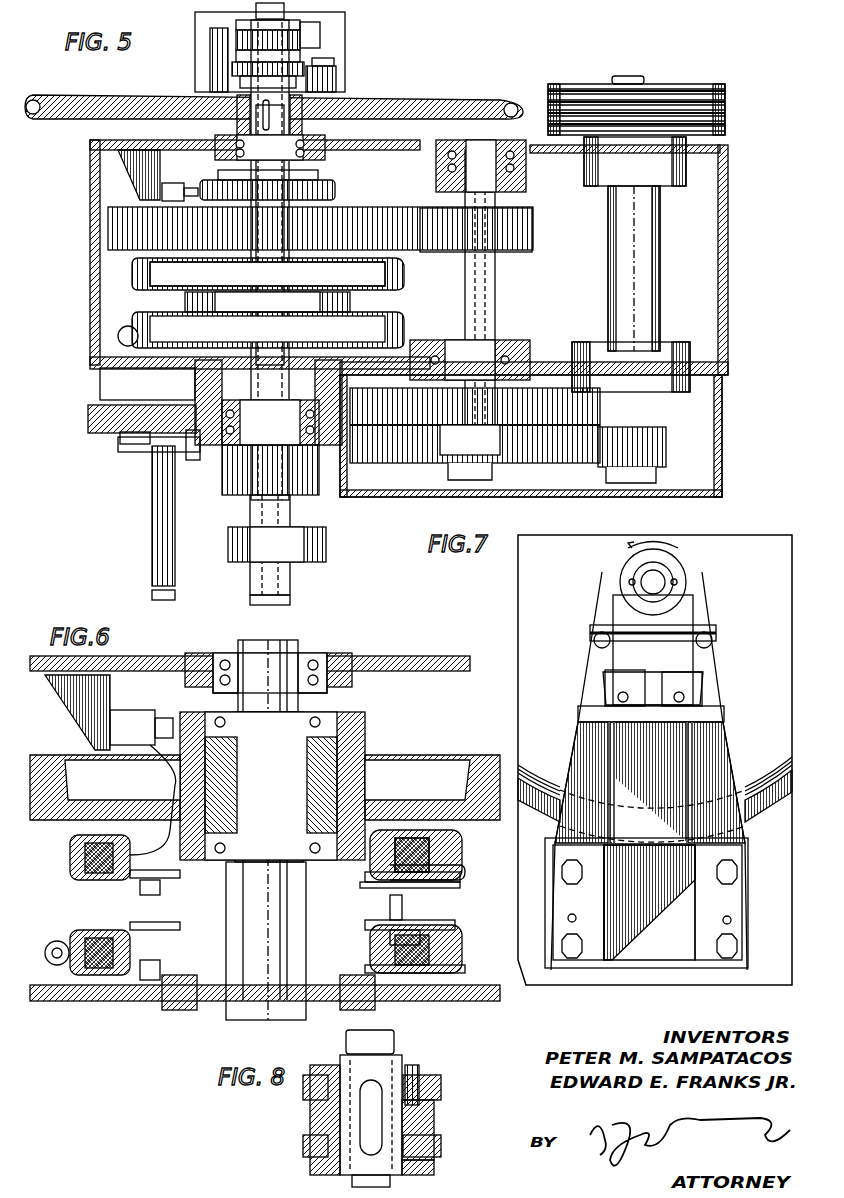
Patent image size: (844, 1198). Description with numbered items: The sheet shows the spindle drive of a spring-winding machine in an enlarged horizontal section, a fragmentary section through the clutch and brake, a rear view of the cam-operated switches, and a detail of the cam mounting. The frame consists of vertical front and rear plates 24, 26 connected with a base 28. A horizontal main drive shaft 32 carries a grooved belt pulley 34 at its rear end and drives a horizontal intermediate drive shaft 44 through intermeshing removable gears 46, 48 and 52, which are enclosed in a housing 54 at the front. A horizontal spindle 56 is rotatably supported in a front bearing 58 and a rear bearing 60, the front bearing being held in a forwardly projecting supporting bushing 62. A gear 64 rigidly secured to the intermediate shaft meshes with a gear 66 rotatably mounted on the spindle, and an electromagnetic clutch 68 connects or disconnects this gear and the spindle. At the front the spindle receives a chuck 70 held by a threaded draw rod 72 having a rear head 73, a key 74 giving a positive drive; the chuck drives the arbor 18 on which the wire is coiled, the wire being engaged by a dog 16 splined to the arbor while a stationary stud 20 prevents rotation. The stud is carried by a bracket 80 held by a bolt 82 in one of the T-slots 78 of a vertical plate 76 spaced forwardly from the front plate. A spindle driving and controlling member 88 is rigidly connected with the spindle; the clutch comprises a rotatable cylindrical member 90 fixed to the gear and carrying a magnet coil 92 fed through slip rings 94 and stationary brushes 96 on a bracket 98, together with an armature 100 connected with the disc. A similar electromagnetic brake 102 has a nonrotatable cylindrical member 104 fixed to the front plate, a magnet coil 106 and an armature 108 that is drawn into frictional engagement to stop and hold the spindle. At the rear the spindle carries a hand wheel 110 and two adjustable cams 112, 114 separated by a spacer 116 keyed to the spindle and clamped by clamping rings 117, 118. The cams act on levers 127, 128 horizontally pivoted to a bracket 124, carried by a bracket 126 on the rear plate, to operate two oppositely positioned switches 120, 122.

In FIG. 5, the dog 16 is at (326, 539).
In FIG. 5, the arbor 18 is at (290, 576).
In FIG. 5, the stud 20 is at (176, 536).
In FIG. 5, the front plate 24 is at (130, 366).
In FIG. 6, the front plate 24 is at (90, 998).
In FIG. 5, the rear plate 26 is at (120, 138).
In FIG. 7, the rear plate 26 is at (735, 985).
In FIG. 6, the rear plate 26 is at (138, 654).
In FIG. 5, the base 28 is at (90, 264).
In FIG. 5, the main drive shaft 32 is at (658, 222).
In FIG. 5, the belt pulley 34 is at (575, 78).
In FIG. 5, the intermediate drive shaft 44 is at (498, 284).
In FIG. 5, the gear 46 is at (666, 445).
In FIG. 5, the gear 48 is at (545, 458).
In FIG. 5, the gear 52 is at (596, 388).
In FIG. 5, the housing 54 is at (724, 422).
In FIG. 5, the spindle 56 is at (313, 331).
In FIG. 6, the spindle 56 is at (290, 695).
In FIG. 8, the spindle 56 is at (340, 1173).
In FIG. 5, the front bearing 58 is at (306, 466).
In FIG. 5, the rear bearing 60 is at (320, 154).
In FIG. 6, the rear bearing 60 is at (318, 651).
In FIG. 5, the supporting bushing 62 is at (196, 382).
In FIG. 6, the supporting bushing 62 is at (170, 1006).
In FIG. 5, the gear 64 is at (532, 217).
In FIG. 5, the gear 66 is at (370, 204).
In FIG. 6, the gear 66 is at (480, 754).
In FIG. 5, the clutch 68 is at (404, 264).
In FIG. 6, the clutch 68 is at (470, 864).
In FIG. 5, the chuck 70 is at (240, 481).
In FIG. 5, the draw rod 72 is at (262, 266).
In FIG. 5, the head 73 is at (290, 5).
In FIG. 7, the head 73 is at (668, 568).
In FIG. 8, the head 73 is at (395, 1035).
In FIG. 5, the key 74 is at (232, 454).
In FIG. 5, the vertical plate 76 is at (90, 414).
In FIG. 5, the T-slots 78 is at (120, 436).
In FIG. 5, the bracket 80 is at (158, 446).
In FIG. 5, the bolt 82 is at (190, 454).
In FIG. 5, the spindle driving and controlling member 88 is at (350, 295).
In FIG. 6, the spindle driving and controlling member 88 is at (345, 884).
In FIG. 6, the cylindrical member 90 is at (462, 834).
In FIG. 6, the magnet coil 92 is at (430, 847).
In FIG. 5, the slip rings 94 is at (340, 185).
In FIG. 6, the slip rings 94 is at (366, 734).
In FIG. 5, the brushes 96 is at (192, 182).
In FIG. 6, the brushes 96 is at (165, 716).
In FIG. 5, the bracket 98 is at (142, 180).
In FIG. 6, the bracket 98 is at (75, 706).
In FIG. 6, the armature 100 is at (430, 884).
In FIG. 5, the brake 102 is at (398, 325).
In FIG. 6, the brake 102 is at (462, 923).
In FIG. 6, the cylindrical member 104 is at (462, 957).
In FIG. 6, the magnet coil 106 is at (430, 937).
In FIG. 6, the armature 108 is at (418, 926).
In FIG. 5, the hand wheel 110 is at (425, 94).
In FIG. 7, the hand wheel 110 is at (528, 776).
In FIG. 5, the cam 112 is at (236, 60).
In FIG. 7, the cam 112 is at (612, 612).
In FIG. 8, the cam 112 is at (441, 1142).
In FIG. 5, the cam 114 is at (300, 32).
In FIG. 7, the cam 114 is at (632, 564).
In FIG. 8, the cam 114 is at (441, 1082).
In FIG. 5, the spacer 116 is at (240, 46).
In FIG. 8, the spacer 116 is at (434, 1104).
In FIG. 5, the clamping ring 117 is at (244, 75).
In FIG. 8, the clamping ring 117 is at (434, 1164).
In FIG. 5, the clamping ring 118 is at (248, 19).
In FIG. 7, the clamping ring 118 is at (634, 584).
In FIG. 8, the clamping ring 118 is at (425, 1063).
In FIG. 7, the switch 120 is at (686, 677).
In FIG. 5, the switch 122 is at (320, 21).
In FIG. 7, the switch 122 is at (605, 686).
In FIG. 5, the bracket 124 is at (338, 75).
In FIG. 7, the bracket 124 is at (712, 669).
In FIG. 5, the bracket 126 is at (350, 130).
In FIG. 7, the bracket 126 is at (722, 742).
In FIG. 5, the lever 127 is at (335, 53).
In FIG. 7, the lever 127 is at (604, 594).
In FIG. 5, the lever 128 is at (210, 29).
In FIG. 7, the lever 128 is at (700, 602).